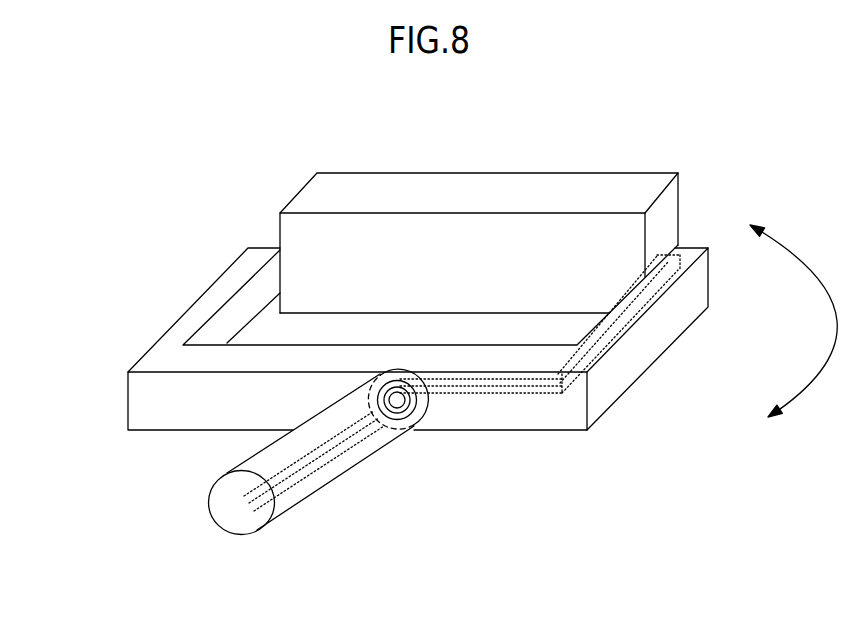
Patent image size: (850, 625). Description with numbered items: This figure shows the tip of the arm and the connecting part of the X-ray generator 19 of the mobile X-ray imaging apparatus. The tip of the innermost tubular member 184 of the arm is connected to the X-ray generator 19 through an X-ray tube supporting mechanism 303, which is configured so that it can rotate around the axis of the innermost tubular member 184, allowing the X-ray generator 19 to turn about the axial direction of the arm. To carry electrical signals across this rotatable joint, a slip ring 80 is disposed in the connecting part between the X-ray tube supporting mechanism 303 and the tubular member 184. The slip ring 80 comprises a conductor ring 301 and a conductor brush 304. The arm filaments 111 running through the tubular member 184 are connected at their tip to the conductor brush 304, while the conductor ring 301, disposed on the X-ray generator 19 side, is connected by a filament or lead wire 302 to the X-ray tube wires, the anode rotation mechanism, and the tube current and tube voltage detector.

The X-ray generator 19 is at (455, 225).
The slip ring 80 is at (490, 472).
The arm filaments 111 is at (314, 464).
The innermost tubular member 184 is at (318, 498).
The conductor ring 301 is at (430, 436).
The lead wire 302 is at (540, 363).
The X-ray tube supporting mechanism 303 is at (404, 337).
The conductor brush 304 is at (408, 439).